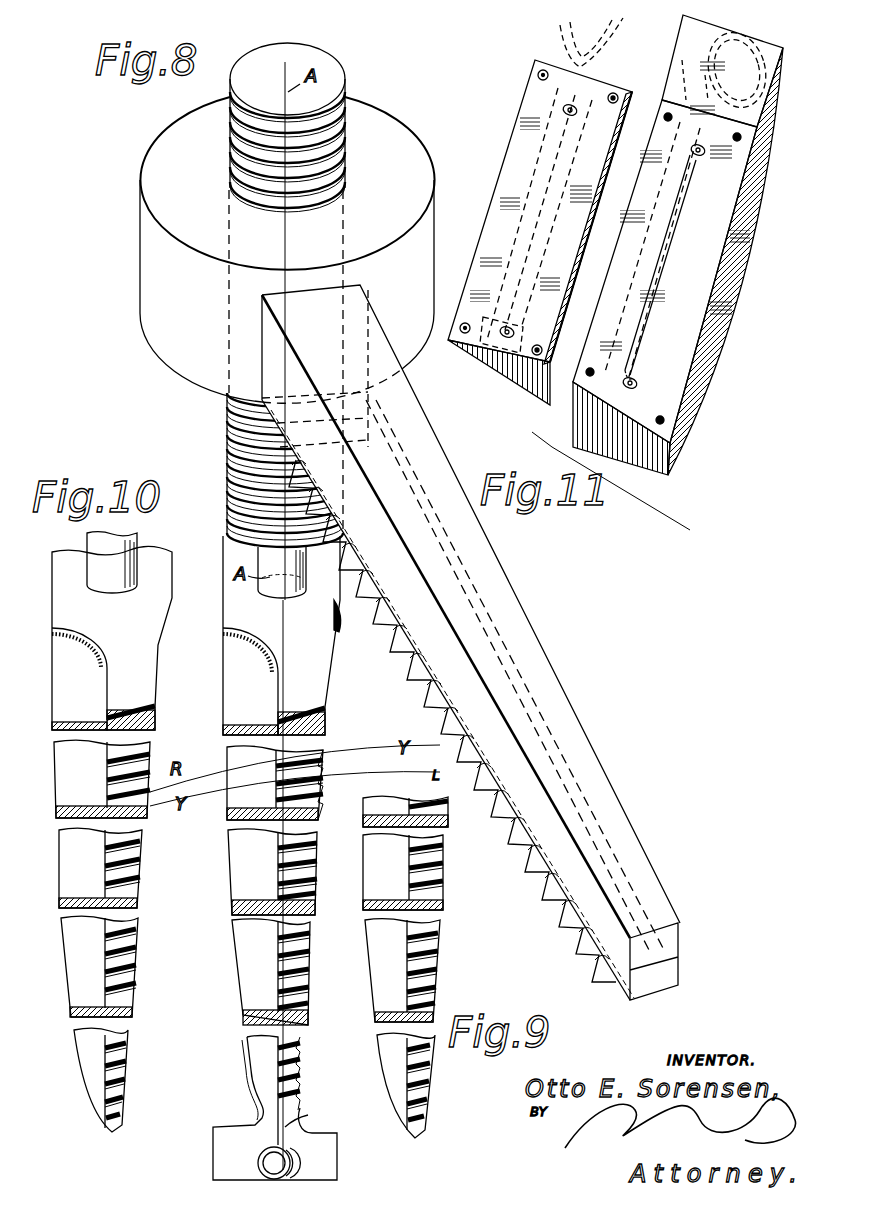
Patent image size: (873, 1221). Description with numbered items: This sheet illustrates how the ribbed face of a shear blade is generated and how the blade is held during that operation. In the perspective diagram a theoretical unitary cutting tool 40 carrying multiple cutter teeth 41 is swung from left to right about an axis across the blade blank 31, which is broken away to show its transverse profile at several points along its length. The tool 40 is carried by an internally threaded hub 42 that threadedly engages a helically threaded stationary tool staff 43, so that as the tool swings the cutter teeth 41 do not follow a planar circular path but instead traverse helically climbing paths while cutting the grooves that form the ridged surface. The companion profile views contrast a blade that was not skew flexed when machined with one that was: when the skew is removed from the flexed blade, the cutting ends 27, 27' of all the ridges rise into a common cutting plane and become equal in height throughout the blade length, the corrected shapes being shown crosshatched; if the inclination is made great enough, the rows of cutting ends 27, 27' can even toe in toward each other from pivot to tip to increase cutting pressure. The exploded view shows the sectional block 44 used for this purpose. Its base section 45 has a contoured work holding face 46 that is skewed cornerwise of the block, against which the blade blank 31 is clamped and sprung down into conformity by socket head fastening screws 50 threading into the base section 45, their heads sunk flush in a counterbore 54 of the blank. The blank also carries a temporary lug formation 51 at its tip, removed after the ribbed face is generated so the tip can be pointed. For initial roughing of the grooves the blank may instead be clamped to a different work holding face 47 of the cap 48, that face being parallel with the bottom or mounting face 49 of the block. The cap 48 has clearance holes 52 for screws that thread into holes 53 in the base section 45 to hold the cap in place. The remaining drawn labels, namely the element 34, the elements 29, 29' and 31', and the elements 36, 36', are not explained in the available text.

In FIG. 10, the cutting ends of the ridges 27 is at (173, 829).
In FIG. 9, the cutting ends of the ridges 27 is at (364, 920).
In FIG. 10, the cutting ends of the ridges 27' is at (131, 1066).
In FIG. 9, the cutting ends of the ridges 27' is at (436, 1055).
In FIG. 10, the core segment 29 is at (102, 779).
In FIG. 9, the core segment 29 is at (325, 855).
In FIG. 10, the core segment (modified) 29' is at (85, 966).
In FIG. 9, the core segment (modified) 29' is at (400, 995).
In FIG. 10, the blade blank 31 is at (112, 631).
In FIG. 9, the blade blank 31 is at (282, 635).
In FIG. 11, the blade blank 31 is at (594, 220).
In FIG. 9, the bore (modified) 31' is at (437, 872).
In FIG. 11, the rod 34 is at (568, 28).
In FIG. 10, the thread groove 36 is at (123, 868).
In FIG. 9, the thread groove 36 is at (291, 874).
In FIG. 11, the thread groove 36 is at (637, 231).
In FIG. 9, the thread groove (modified) 36' is at (433, 970).
In FIG. 8, the unitary cutting tool 40 is at (520, 628).
In FIG. 8, the cutter teeth 41 is at (408, 662).
In FIG. 8, the internally threaded hub 42 is at (287, 250).
In FIG. 8, the tool staff 43 is at (333, 149).
In FIG. 11, the sectional block 44 is at (672, 63).
In FIG. 11, the base section of block 45 is at (745, 248).
In FIG. 11, the work holding face 46 is at (688, 315).
In FIG. 11, the work holding face of cap 47 is at (515, 170).
In FIG. 11, the cap 48 is at (515, 112).
In FIG. 11, the bottom or mounting face 49 is at (672, 470).
In FIG. 11, the socket head fastening screws 50 is at (577, 112).
In FIG. 9, the temporary lug formation 51 is at (243, 1140).
In FIG. 11, the temporary lug formation 51 is at (522, 335).
In FIG. 11, the clearance holes 52 is at (543, 70).
In FIG. 11, the holes in block section 53 is at (668, 121).
In FIG. 9, the counterbore 54 is at (292, 1160).